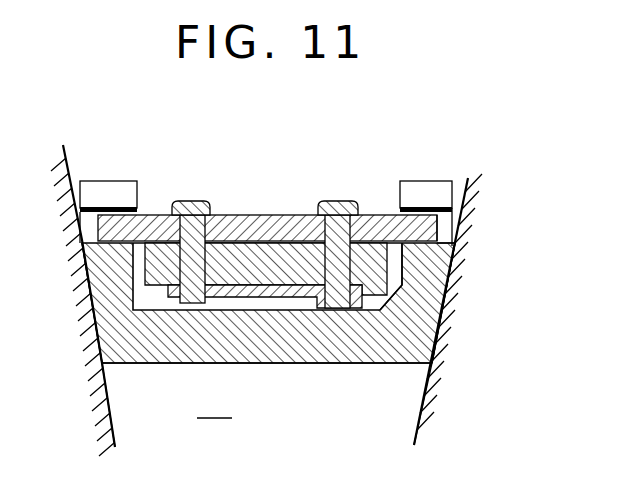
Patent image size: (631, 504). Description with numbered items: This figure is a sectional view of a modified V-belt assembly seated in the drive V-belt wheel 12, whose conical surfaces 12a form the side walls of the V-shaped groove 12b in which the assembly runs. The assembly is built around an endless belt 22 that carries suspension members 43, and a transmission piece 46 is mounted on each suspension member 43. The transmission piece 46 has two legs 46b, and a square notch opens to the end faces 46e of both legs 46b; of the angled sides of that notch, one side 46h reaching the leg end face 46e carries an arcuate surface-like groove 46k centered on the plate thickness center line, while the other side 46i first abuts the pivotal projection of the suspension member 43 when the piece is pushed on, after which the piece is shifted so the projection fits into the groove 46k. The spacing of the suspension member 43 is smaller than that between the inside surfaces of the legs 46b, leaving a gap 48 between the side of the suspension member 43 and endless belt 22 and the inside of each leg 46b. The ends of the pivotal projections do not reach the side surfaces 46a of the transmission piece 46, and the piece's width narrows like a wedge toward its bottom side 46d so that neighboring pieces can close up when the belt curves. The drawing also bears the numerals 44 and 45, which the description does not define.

The drive V-belt wheel 12 is at (470, 197).
The conical surfaces 12a is at (107, 385).
The V-shaped groove 12b is at (214, 405).
The endless belt 22 is at (250, 250).
The suspension member 43 is at (283, 215).
The retaining plate 44 is at (293, 300).
The bolt 45 is at (345, 202).
The transmission piece 46 is at (254, 370).
The side surfaces of transmission piece 46a is at (433, 352).
The legs 46b is at (447, 284).
The bottom side 46d is at (360, 347).
The leg end faces 46e is at (423, 183).
The one side of notch 46h is at (455, 187).
The other side of notch 46i is at (450, 241).
The arcuate surface-like groove 46k is at (445, 225).
The gap 48 is at (441, 302).